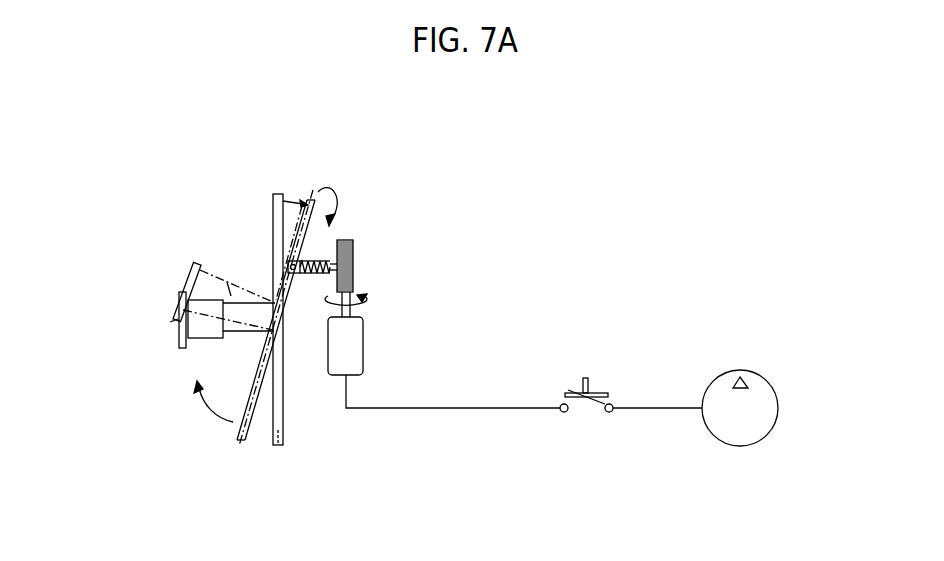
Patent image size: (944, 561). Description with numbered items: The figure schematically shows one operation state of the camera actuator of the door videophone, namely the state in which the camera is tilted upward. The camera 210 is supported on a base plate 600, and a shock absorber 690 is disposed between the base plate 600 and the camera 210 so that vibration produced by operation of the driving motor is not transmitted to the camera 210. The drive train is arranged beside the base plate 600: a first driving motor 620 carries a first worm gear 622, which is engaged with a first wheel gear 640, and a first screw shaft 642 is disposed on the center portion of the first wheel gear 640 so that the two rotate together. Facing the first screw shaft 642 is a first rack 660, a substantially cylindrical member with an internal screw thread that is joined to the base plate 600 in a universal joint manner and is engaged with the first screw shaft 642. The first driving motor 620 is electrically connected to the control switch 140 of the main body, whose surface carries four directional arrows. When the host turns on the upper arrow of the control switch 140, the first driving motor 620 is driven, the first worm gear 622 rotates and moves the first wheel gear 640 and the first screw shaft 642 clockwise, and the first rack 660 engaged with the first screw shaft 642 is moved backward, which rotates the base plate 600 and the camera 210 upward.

The control switch 140 is at (772, 387).
The camera 210 is at (177, 320).
The base plate 600 is at (280, 447).
The first driving motor 620 is at (350, 340).
The first worm gear 622 is at (355, 274).
The first wheel gear 640 is at (353, 250).
The first screw shaft 642 is at (325, 274).
The first rack 660 is at (317, 258).
The shock absorber 690 is at (235, 326).